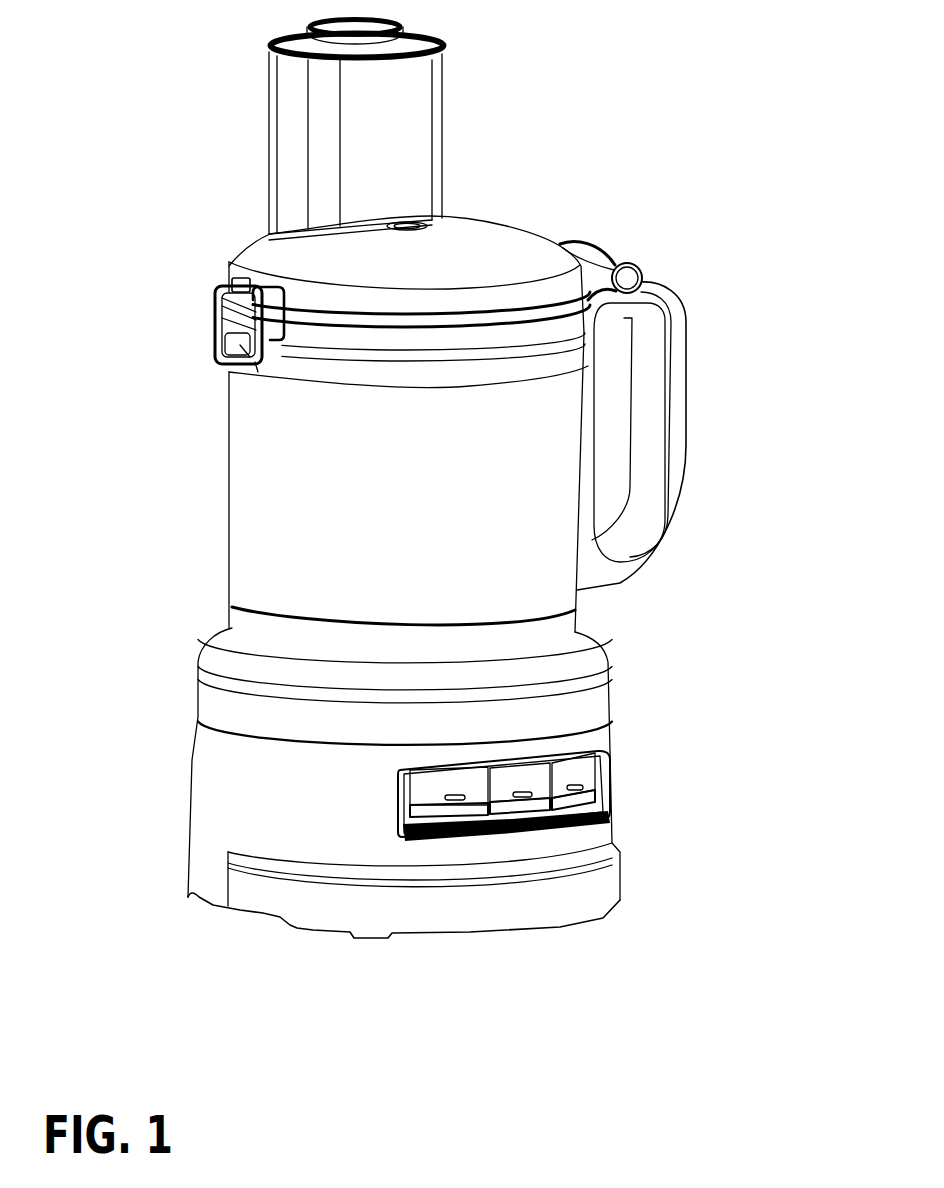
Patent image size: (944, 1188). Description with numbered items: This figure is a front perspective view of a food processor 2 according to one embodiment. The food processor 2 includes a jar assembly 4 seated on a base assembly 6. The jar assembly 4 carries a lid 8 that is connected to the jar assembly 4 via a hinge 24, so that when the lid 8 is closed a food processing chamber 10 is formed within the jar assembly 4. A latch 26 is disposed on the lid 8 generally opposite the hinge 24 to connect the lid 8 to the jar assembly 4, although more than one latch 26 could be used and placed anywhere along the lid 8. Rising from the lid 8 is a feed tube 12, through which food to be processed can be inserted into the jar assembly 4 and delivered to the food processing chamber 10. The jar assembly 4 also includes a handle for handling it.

The food processor 2 is at (419, 479).
The jar assembly 4 is at (555, 362).
The base assembly 6 is at (575, 708).
The lid 8 is at (505, 247).
The food processing chamber 10 is at (277, 472).
The feed tube 12 is at (412, 122).
The hinge 24 is at (627, 276).
The latch 26 is at (234, 362).